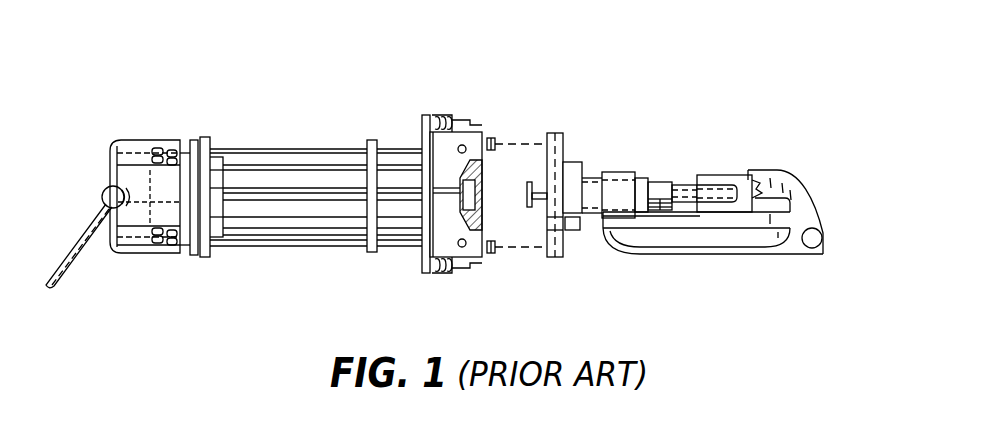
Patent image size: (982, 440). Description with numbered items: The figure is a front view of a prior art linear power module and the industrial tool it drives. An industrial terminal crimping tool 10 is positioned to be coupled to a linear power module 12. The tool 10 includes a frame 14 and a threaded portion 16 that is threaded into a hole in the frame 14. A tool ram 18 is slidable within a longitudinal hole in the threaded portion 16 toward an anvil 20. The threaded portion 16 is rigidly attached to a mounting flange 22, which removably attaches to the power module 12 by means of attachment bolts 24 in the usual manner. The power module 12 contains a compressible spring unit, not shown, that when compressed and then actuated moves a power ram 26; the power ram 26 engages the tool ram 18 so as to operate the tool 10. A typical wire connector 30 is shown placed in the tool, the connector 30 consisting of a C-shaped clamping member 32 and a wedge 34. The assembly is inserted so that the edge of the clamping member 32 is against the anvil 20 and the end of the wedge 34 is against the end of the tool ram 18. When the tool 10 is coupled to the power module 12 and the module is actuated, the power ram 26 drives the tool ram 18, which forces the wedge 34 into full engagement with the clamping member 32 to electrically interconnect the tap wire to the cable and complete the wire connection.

The industrial terminal crimping tool 10 is at (733, 259).
The linear power module 12 is at (313, 88).
The frame 14 is at (788, 256).
The threaded portion 16 is at (598, 176).
The tool ram 18 is at (537, 200).
The anvil 20 is at (752, 168).
The mounting flange 22 is at (555, 132).
The attachment bolts 24 is at (487, 136).
The power ram 26 is at (480, 192).
The wire connector 30 is at (728, 173).
The C-shaped clamping member 32 is at (745, 177).
The wedge 34 is at (683, 183).